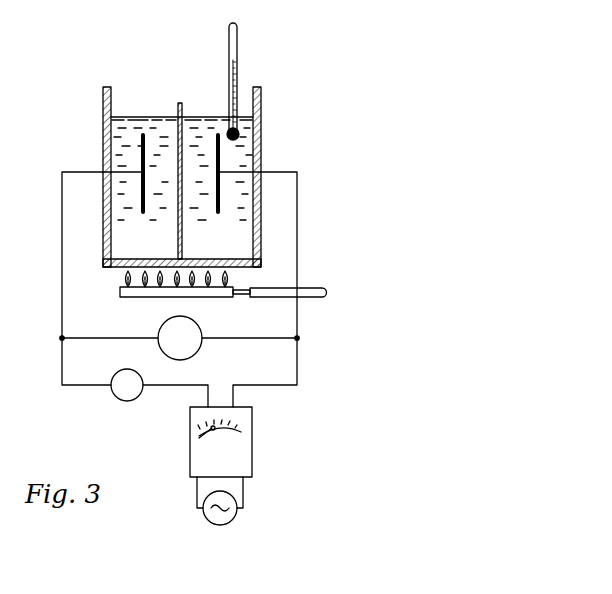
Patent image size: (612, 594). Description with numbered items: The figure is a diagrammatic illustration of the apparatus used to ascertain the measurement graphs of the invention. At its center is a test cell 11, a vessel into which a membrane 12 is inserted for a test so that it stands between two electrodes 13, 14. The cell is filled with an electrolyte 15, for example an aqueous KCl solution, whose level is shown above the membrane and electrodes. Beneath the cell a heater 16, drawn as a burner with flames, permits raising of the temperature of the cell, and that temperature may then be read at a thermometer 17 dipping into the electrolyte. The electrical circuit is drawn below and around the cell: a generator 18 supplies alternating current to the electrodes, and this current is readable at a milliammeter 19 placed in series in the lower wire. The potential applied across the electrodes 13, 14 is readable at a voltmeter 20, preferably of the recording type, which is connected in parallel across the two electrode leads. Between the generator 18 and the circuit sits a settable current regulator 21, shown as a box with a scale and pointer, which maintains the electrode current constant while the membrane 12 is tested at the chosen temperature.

The test cell 11 is at (258, 108).
The membrane 12 is at (177, 229).
The electrode 13 is at (141, 152).
The electrode 14 is at (222, 155).
The electrolyte 15 is at (132, 118).
The heater 16 is at (135, 298).
The thermometer 17 is at (240, 48).
The generator 18 is at (230, 514).
The milliammeter 19 is at (120, 400).
The voltmeter 20 is at (196, 331).
The current regulator 21 is at (245, 446).